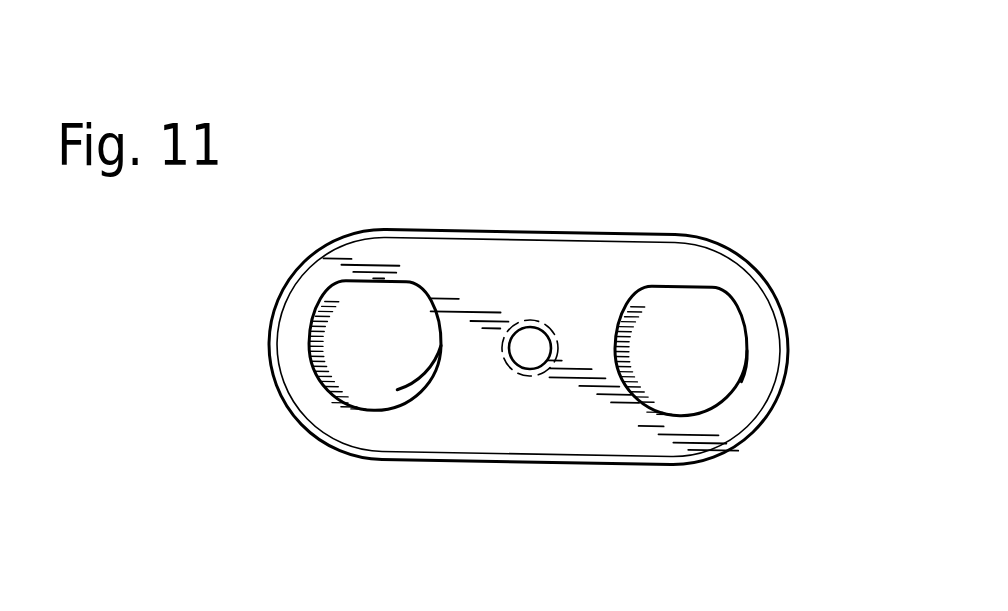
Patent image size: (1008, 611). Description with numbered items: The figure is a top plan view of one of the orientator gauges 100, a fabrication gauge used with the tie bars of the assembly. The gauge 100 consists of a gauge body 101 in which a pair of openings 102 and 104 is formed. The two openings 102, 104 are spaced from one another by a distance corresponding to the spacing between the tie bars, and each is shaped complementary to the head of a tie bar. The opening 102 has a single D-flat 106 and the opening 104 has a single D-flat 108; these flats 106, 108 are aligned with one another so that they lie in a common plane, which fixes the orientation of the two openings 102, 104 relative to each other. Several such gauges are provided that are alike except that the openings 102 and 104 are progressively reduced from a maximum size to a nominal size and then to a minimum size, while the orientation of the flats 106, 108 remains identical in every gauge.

The orientator gauge 100 is at (635, 147).
The gauge body 101 is at (640, 443).
The opening 102 is at (738, 366).
The opening 104 is at (405, 396).
The D-flat 106 is at (686, 298).
The D-flat 108 is at (346, 290).